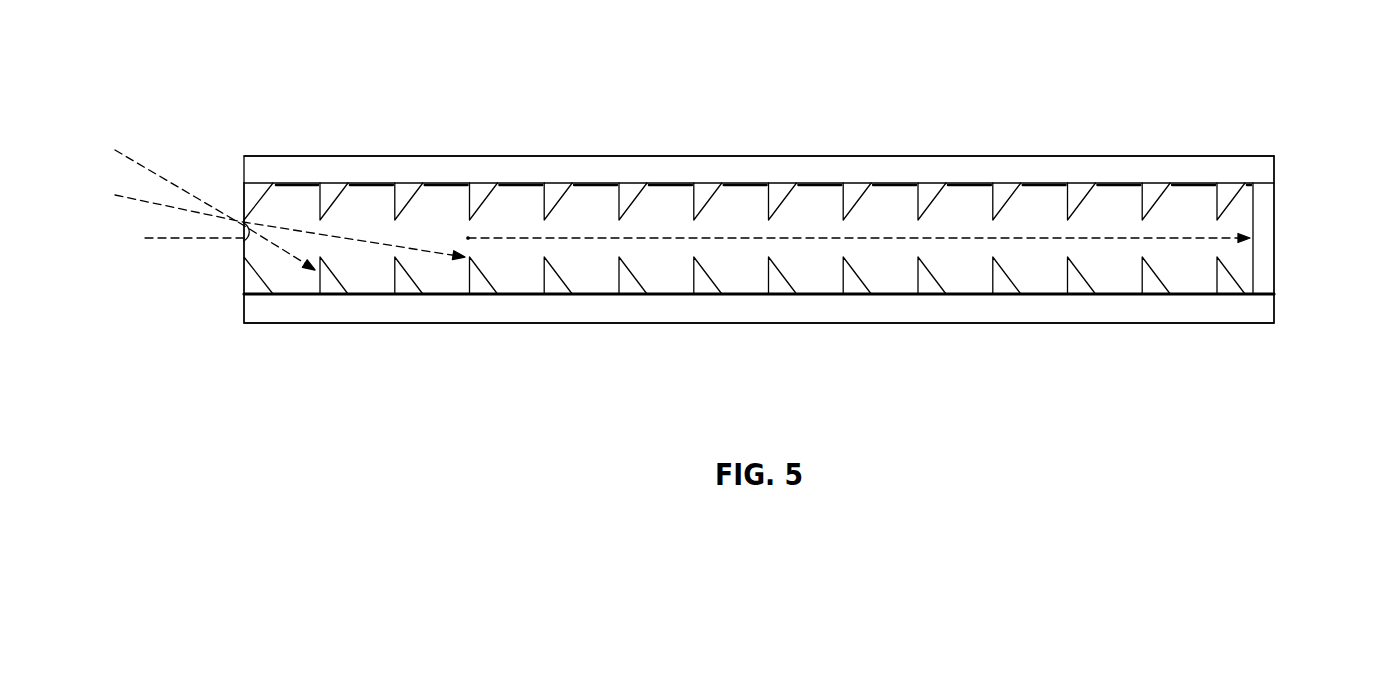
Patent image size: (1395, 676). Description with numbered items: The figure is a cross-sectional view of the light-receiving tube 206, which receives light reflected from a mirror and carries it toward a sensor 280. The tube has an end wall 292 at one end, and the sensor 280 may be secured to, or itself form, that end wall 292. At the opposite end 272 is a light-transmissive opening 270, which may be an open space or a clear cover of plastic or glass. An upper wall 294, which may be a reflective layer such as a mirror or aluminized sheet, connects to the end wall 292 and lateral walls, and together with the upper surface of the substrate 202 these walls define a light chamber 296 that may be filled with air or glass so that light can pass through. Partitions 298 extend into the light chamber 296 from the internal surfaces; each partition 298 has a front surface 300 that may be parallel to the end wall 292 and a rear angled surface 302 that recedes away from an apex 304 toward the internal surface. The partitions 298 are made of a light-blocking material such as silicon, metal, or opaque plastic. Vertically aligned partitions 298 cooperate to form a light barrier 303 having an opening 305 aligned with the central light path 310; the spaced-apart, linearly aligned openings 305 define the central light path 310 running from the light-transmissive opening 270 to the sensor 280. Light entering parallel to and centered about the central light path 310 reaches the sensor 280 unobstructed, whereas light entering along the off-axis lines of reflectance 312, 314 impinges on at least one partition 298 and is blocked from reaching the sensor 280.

The light-receiving tube 206 is at (378, 78).
The substrate 202 is at (513, 312).
The upper wall 294 is at (626, 170).
The partitions 298 is at (330, 193).
The light barrier 303 is at (480, 190).
The light chamber 296 is at (437, 272).
The sensor 280 is at (1248, 218).
The end wall 292 is at (1275, 207).
The central light path 310 is at (738, 237).
The opening 305 is at (470, 237).
The line of reflectance 312 is at (152, 168).
The line of reflectance 314 is at (150, 205).
The front surface 300 is at (243, 198).
The rear angled surface 302 is at (267, 200).
The apex 304 is at (243, 238).
The light-transmissive opening 270 is at (243, 252).
The end 272 is at (242, 313).